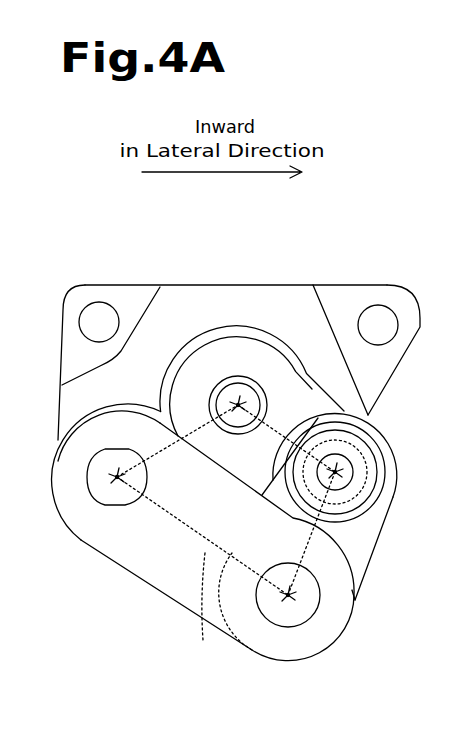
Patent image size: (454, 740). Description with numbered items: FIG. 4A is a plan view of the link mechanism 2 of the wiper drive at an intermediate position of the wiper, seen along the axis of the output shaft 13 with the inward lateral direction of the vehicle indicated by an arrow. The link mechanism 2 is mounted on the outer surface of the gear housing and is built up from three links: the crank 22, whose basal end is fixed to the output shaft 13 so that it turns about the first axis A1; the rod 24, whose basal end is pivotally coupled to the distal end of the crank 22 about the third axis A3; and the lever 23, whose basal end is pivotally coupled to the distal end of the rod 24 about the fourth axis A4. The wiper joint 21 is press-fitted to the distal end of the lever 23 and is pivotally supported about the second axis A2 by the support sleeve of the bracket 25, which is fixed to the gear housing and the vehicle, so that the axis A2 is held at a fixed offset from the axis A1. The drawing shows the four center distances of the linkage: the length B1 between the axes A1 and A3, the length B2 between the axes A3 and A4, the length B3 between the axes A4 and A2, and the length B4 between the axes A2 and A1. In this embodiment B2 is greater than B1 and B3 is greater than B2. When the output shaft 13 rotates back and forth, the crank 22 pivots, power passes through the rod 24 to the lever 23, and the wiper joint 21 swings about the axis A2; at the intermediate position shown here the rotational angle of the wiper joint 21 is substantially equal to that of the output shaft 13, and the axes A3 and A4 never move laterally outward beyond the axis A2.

The link mechanism 2 is at (331, 245).
The output shaft 13 is at (255, 405).
The wiper joint 21 is at (123, 504).
The crank 22 is at (339, 405).
The lever 23 is at (141, 563).
The rod 24 is at (369, 548).
The bracket 25 is at (229, 284).
The first axis A1 is at (237, 400).
The second axis A2 is at (117, 475).
The third axis A3 is at (338, 474).
The fourth axis A4 is at (289, 597).
The length between axes A1 and A3 B1 is at (368, 452).
The length between axes A3 and A4 B2 is at (358, 596).
The length between axes A4 and A2 B3 is at (205, 615).
The length between axes A2 and A1 B4 is at (153, 452).